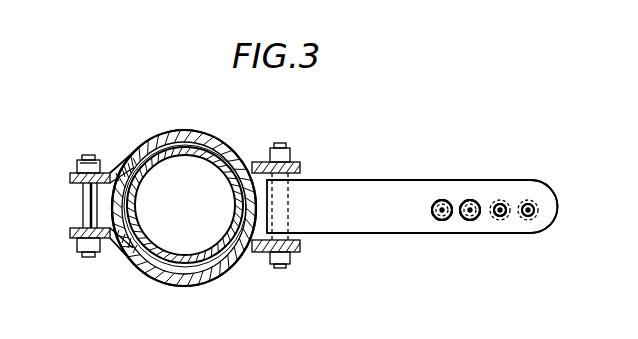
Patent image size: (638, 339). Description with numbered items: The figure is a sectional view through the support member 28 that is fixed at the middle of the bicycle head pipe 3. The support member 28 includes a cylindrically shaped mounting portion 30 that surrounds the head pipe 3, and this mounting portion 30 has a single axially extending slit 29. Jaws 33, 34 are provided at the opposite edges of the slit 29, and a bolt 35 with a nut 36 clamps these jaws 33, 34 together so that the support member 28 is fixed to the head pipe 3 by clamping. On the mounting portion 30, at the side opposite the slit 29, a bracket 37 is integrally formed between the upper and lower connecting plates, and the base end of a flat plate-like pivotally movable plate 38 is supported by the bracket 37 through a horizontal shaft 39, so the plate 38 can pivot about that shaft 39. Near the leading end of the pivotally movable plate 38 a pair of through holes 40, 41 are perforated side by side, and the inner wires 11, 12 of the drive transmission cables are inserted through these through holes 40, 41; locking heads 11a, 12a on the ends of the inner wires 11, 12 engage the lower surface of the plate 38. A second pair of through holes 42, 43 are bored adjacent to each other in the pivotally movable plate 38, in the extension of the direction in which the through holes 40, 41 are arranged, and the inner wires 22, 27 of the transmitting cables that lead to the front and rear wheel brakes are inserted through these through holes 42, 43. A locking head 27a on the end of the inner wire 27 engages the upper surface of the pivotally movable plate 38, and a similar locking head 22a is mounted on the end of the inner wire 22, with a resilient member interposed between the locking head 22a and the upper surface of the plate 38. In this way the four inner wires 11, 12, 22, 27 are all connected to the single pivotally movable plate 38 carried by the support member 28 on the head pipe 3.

The head pipe 3 is at (208, 146).
The support member 28 is at (232, 283).
The slit 29 is at (112, 220).
The mounting portion 30 is at (178, 132).
The jaw 33 is at (72, 234).
The jaw 34 is at (70, 177).
The bolt 35 is at (83, 210).
The nut 36 is at (101, 166).
The bracket 37 is at (258, 252).
The pivotally movable plate 38 is at (372, 234).
The horizontal shaft 39 is at (282, 264).
The through hole 40 is at (546, 212).
The through hole 41 is at (503, 200).
The through hole 42 is at (433, 198).
The through hole 43 is at (467, 200).
The inner wire 11 is at (528, 221).
The inner wire 12 is at (500, 221).
The inner wire 22 is at (440, 221).
The inner wire 27 is at (470, 221).
The locking head 11a is at (528, 200).
The locking head 12a is at (498, 198).
The locking head 22a is at (443, 200).
The locking head 27a is at (472, 200).